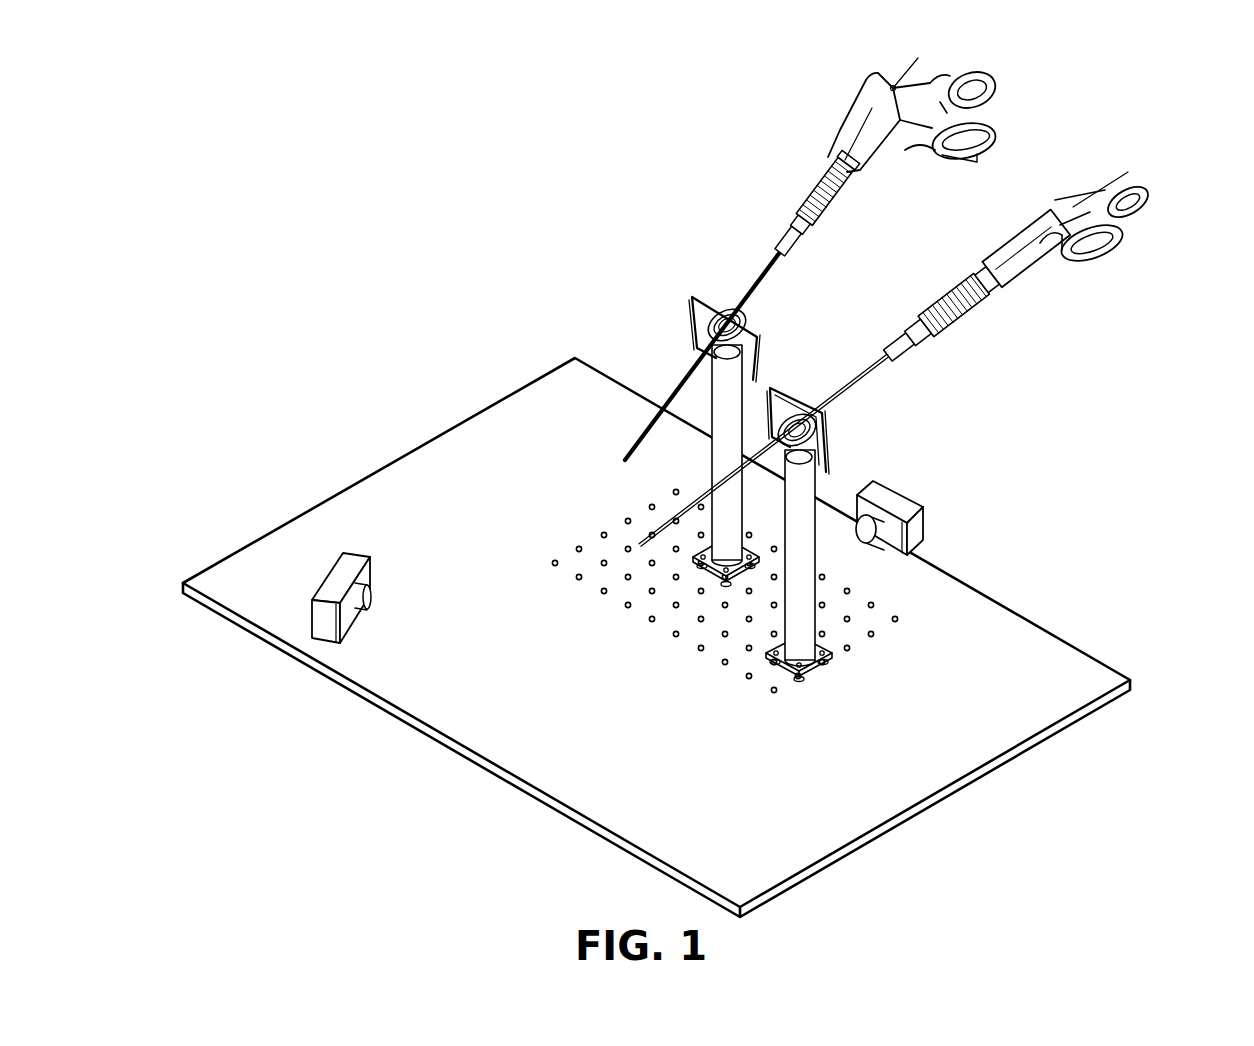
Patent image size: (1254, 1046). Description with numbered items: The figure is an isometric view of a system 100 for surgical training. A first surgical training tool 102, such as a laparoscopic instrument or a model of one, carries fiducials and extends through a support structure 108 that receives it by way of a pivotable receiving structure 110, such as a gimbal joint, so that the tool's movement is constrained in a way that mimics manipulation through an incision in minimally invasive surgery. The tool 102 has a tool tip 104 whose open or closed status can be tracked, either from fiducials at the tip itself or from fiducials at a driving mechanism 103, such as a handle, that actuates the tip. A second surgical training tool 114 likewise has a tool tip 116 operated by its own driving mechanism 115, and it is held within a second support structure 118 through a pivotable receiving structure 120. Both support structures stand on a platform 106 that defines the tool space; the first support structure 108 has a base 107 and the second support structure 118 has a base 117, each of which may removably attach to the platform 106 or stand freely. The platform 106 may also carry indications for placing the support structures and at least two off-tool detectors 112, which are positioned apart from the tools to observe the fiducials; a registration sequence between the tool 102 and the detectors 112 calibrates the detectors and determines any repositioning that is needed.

The system for surgical training 100 is at (300, 193).
The surgical training tool 102 is at (823, 147).
The driving mechanism 103 is at (930, 80).
The tool tip 104 is at (623, 468).
The platform 106 is at (383, 467).
The base 107 is at (690, 565).
The support structure 108 is at (744, 398).
The pivotable receiving structure 110 is at (697, 302).
The off-tool detectors 112 is at (308, 620).
The second surgical training tool 114 is at (980, 323).
The driving mechanism 115 is at (1140, 187).
The tool tip 116 is at (628, 520).
The base 117 is at (817, 650).
The second support structure 118 is at (818, 502).
The pivotable receiving structure 120 is at (828, 442).